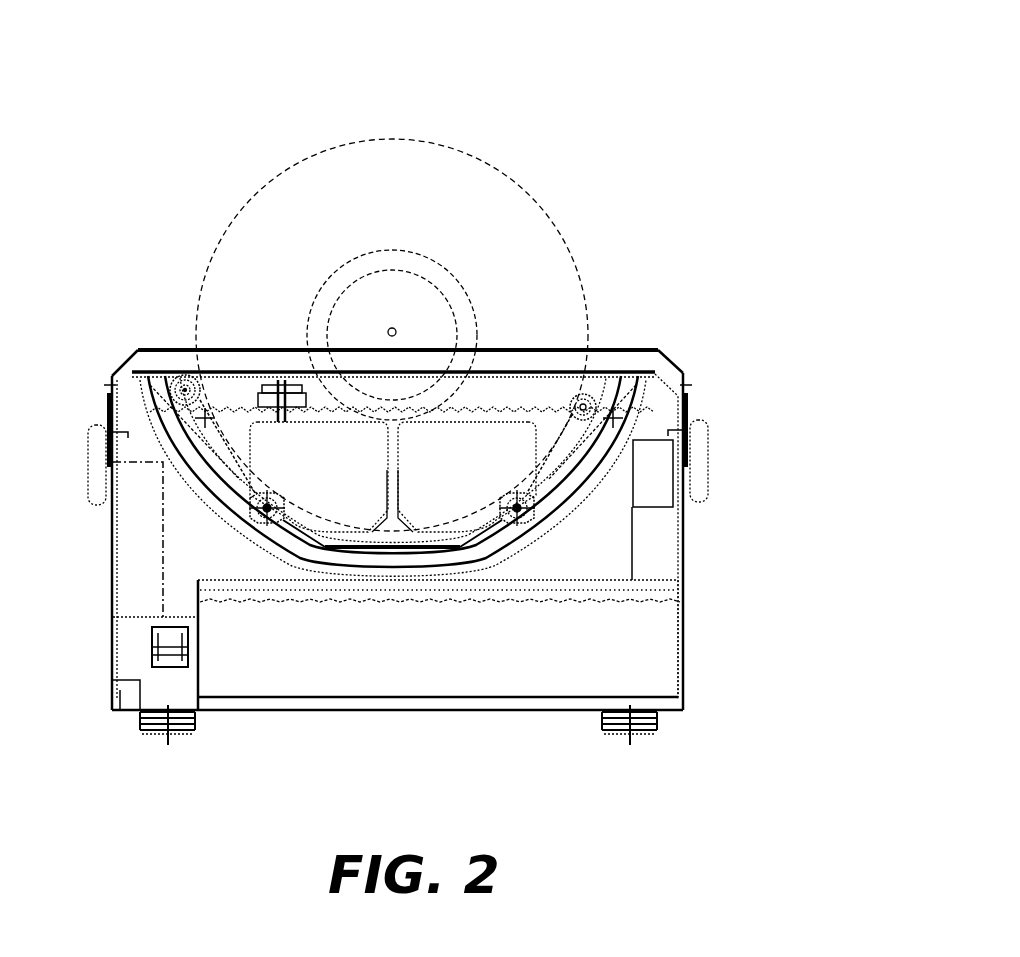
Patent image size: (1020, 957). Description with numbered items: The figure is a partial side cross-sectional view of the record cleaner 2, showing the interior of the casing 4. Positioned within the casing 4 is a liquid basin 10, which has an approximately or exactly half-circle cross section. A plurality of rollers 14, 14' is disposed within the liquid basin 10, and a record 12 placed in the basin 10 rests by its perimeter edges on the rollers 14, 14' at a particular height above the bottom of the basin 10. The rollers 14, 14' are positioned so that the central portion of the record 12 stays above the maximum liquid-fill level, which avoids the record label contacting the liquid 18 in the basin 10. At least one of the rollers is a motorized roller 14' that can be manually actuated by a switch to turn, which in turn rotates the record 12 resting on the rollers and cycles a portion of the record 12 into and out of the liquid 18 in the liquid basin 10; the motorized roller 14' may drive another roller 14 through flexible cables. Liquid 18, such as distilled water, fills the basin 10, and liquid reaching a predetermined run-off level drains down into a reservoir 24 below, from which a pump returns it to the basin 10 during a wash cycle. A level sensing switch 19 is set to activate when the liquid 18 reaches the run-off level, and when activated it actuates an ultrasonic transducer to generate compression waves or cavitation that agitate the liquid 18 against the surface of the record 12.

The machine 2 is at (601, 156).
The casing 4 is at (660, 352).
The liquid basin 10 is at (212, 498).
The record 12 is at (287, 187).
The roller 14 is at (668, 483).
The motorized roller 14' is at (122, 342).
The liquid 18 is at (542, 412).
The level sensing switch 19 is at (281, 385).
The reservoir 24 is at (665, 592).